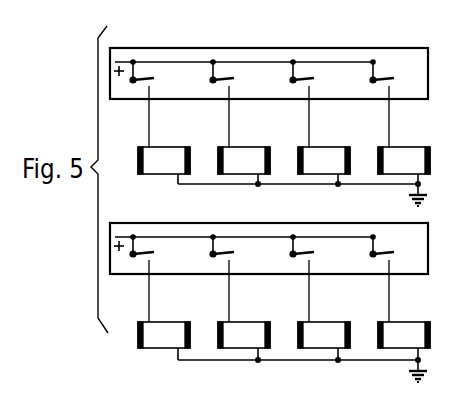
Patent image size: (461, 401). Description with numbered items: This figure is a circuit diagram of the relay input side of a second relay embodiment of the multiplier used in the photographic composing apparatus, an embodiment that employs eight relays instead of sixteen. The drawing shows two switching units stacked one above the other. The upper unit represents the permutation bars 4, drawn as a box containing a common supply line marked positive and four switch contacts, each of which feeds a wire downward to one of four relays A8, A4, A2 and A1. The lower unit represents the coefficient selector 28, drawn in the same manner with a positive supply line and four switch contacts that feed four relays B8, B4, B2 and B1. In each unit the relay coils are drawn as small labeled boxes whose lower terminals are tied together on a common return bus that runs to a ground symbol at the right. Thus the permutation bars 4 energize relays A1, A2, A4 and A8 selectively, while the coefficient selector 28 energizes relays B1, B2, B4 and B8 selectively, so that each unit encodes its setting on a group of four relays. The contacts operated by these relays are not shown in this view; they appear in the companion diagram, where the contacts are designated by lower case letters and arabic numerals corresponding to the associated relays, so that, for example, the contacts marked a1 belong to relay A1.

The permutation bars 4 is at (252, 48).
The coefficient selector 28 is at (263, 223).
The relay A8 is at (164, 135).
The relay A4 is at (244, 136).
The relay A2 is at (324, 136).
The relay A1 is at (404, 136).
The relay B8 is at (164, 310).
The relay B4 is at (244, 311).
The relay B2 is at (324, 311).
The relay B1 is at (404, 311).